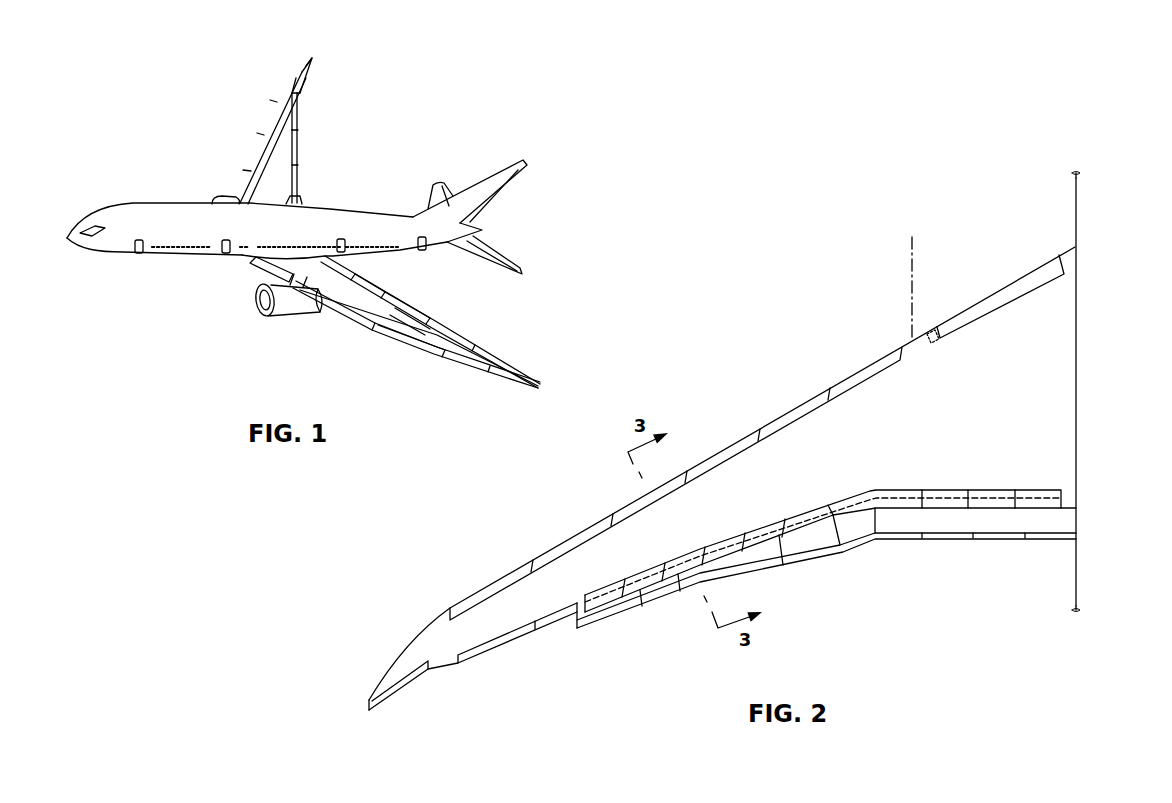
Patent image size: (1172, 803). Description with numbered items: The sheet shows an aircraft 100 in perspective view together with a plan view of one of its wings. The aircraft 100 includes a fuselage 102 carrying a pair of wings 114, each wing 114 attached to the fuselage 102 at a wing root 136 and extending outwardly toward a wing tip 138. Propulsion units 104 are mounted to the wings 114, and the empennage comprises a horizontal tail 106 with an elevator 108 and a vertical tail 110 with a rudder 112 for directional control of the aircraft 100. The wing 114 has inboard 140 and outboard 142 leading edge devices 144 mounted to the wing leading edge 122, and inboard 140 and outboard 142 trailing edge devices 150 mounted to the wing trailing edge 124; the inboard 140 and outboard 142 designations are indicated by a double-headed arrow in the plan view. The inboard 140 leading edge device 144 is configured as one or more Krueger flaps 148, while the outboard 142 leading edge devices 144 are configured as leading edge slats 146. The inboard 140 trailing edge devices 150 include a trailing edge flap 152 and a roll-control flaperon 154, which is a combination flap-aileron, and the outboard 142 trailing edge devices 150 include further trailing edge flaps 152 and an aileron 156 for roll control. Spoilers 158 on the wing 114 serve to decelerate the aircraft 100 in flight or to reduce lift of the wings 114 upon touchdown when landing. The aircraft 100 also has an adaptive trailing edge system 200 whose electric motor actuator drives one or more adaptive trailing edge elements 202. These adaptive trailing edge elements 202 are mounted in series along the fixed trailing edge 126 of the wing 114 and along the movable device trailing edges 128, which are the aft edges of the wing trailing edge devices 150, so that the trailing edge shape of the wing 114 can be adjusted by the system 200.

In FIG. 1, the aircraft 100 is at (103, 204).
In FIG. 2, the aircraft 100 is at (1074, 188).
In FIG. 1, the fuselage 102 is at (141, 217).
In FIG. 2, the fuselage 102 is at (1077, 172).
In FIG. 1, the propulsion unit 104 is at (213, 197).
In FIG. 1, the horizontal tail 106 is at (514, 283).
In FIG. 1, the elevator 108 is at (507, 256).
In FIG. 1, the vertical tail 110 is at (515, 160).
In FIG. 1, the rudder 112 is at (514, 190).
In FIG. 1, the wing 114 is at (290, 80).
In FIG. 2, the wing 114 is at (404, 651).
In FIG. 1, the wing leading edge 122 is at (278, 106).
In FIG. 2, the wing leading edge 122 is at (438, 620).
In FIG. 1, the wing trailing edge 124 is at (298, 121).
In FIG. 2, the wing trailing edge 124 is at (1076, 541).
In FIG. 1, the fixed trailing edge 126 is at (305, 82).
In FIG. 2, the fixed trailing edge 126 is at (408, 696).
In FIG. 1, the device trailing edge 128 is at (298, 150).
In FIG. 2, the device trailing edge 128 is at (520, 660).
In FIG. 1, the wing root 136 is at (302, 200).
In FIG. 2, the wing root 136 is at (1078, 432).
In FIG. 1, the wing tip 138 is at (305, 66).
In FIG. 2, the wing tip 138 is at (380, 684).
In FIG. 1, the inboard 140 is at (233, 262).
In FIG. 2, the inboard 140 is at (912, 247).
In FIG. 1, the outboard 142 is at (352, 346).
In FIG. 2, the outboard 142 is at (912, 247).
In FIG. 1, the wing leading edge device 144 is at (255, 268).
In FIG. 2, the wing leading edge device 144 is at (790, 418).
In FIG. 1, the leading edge slat 146 is at (418, 347).
In FIG. 2, the leading edge slat 146 is at (866, 384).
In FIG. 1, the Krueger flap 148 is at (270, 278).
In FIG. 2, the Krueger flap 148 is at (1006, 290).
In FIG. 1, the wing trailing edge device 150 is at (390, 311).
In FIG. 2, the wing trailing edge device 150 is at (778, 552).
In FIG. 1, the trailing edge flap 152 is at (345, 272).
In FIG. 2, the trailing edge flap 152 is at (640, 605).
In FIG. 1, the flaperon 154 is at (356, 280).
In FIG. 2, the flaperon 154 is at (848, 541).
In FIG. 1, the aileron 156 is at (478, 352).
In FIG. 2, the aileron 156 is at (552, 648).
In FIG. 2, the spoiler 158 is at (662, 568).
In FIG. 1, the adaptive trailing edge system 200 is at (300, 94).
In FIG. 2, the adaptive trailing edge system 200 is at (900, 540).
In FIG. 2, the adaptive trailing edge element 202 is at (440, 680).